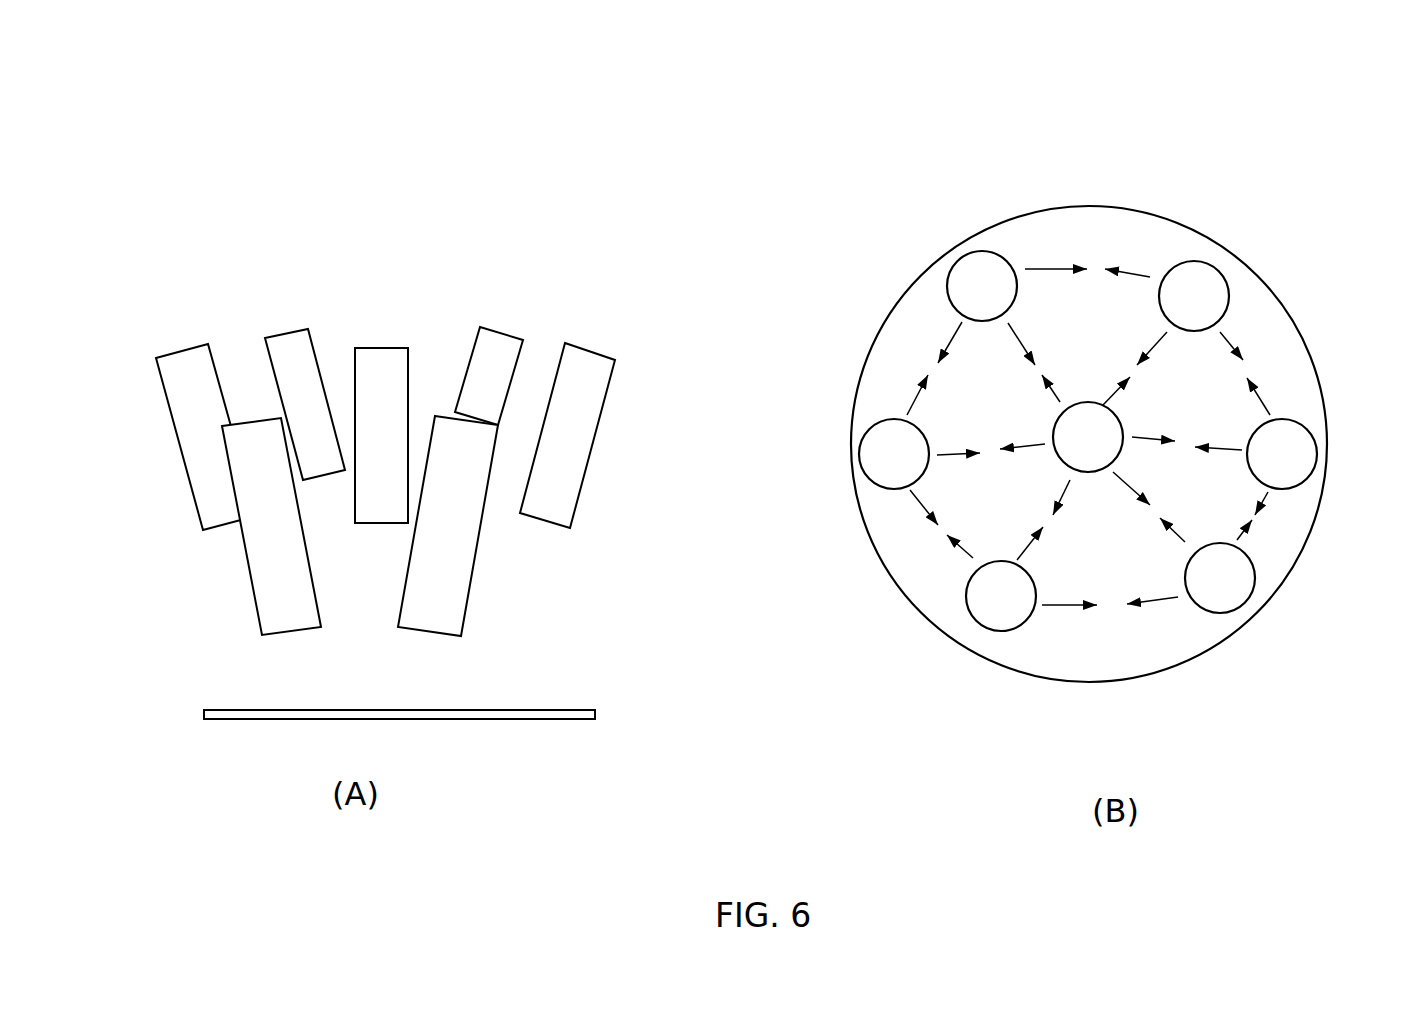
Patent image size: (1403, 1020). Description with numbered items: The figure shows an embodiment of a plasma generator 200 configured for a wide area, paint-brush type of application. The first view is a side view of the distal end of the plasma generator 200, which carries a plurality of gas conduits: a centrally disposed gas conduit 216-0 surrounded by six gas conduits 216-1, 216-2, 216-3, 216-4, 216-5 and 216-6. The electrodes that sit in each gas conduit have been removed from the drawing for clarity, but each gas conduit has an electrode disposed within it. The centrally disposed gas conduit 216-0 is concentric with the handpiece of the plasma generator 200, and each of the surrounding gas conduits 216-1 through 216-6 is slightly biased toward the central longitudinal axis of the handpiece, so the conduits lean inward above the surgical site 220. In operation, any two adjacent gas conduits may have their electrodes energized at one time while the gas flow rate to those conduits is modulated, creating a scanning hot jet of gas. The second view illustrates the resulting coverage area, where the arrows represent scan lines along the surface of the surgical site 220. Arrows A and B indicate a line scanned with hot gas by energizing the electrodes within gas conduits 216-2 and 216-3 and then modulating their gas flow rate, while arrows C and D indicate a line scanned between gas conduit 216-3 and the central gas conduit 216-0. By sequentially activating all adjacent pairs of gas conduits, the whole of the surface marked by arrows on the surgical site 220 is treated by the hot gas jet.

In FIG. 6A, the plasma generator 200 is at (329, 162).
In FIG. 6A, the centrally disposed gas conduit 216-0 is at (377, 347).
In FIG. 6B, the centrally disposed gas conduit 216-0 is at (1088, 437).
In FIG. 6A, the gas conduit 216-1 is at (260, 422).
In FIG. 6B, the gas conduit 216-1 is at (983, 605).
In FIG. 6A, the gas conduit 216-2 is at (163, 353).
In FIG. 6B, the gas conduit 216-2 is at (877, 455).
In FIG. 6A, the gas conduit 216-3 is at (300, 332).
In FIG. 6B, the gas conduit 216-3 is at (963, 277).
In FIG. 6A, the gas conduit 216-4 is at (495, 350).
In FIG. 6B, the gas conduit 216-4 is at (1192, 277).
In FIG. 6A, the gas conduit 216-5 is at (600, 362).
In FIG. 6B, the gas conduit 216-5 is at (1300, 463).
In FIG. 6A, the gas conduit 216-6 is at (443, 414).
In FIG. 6B, the gas conduit 216-6 is at (1220, 595).
In FIG. 6A, the surgical site 220 is at (595, 713).
In FIG. 6B, the surgical site 220 is at (1088, 667).
In FIG. 6B, the arrow A is at (907, 413).
In FIG. 6B, the arrow B is at (960, 323).
In FIG. 6B, the arrow C is at (1013, 332).
In FIG. 6B, the arrow D is at (1053, 402).